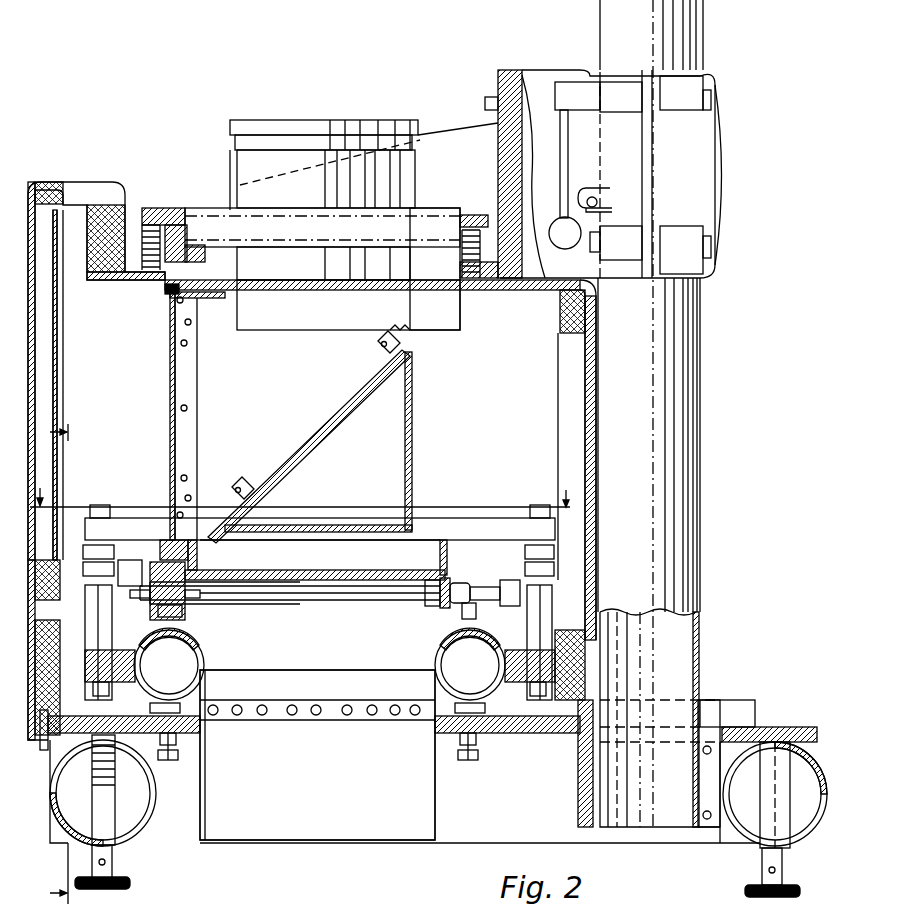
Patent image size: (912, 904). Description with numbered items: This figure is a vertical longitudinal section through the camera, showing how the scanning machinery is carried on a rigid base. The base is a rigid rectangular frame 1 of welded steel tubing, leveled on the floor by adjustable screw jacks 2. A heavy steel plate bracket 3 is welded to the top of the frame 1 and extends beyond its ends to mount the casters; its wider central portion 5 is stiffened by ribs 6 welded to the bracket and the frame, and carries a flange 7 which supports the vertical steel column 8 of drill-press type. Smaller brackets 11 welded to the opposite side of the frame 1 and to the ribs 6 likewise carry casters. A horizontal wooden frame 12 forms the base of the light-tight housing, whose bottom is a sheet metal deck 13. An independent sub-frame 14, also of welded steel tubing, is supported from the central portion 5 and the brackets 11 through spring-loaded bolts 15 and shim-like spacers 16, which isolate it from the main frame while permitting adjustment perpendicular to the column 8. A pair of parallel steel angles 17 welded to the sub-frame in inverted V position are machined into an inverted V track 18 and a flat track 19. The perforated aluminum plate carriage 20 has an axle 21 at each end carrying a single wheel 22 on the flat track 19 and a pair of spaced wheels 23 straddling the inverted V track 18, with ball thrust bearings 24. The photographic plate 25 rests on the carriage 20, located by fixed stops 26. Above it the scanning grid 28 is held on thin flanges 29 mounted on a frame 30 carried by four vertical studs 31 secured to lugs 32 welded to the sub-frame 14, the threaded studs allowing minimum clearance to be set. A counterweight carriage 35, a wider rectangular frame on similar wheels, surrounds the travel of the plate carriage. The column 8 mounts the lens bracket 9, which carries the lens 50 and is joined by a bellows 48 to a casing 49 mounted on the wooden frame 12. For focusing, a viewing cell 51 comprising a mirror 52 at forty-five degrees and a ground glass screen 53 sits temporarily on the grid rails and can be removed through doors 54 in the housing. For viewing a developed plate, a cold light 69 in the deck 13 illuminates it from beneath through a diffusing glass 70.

The rigid rectangular frame 1 is at (155, 790).
The adjustable screw jacks 2 is at (112, 862).
The bracket 3 is at (798, 712).
The wider central portion 5 is at (300, 488).
The ribs 6 is at (301, 755).
The flange 7 is at (724, 700).
The steel column 8 is at (703, 28).
The lens bracket 9 is at (724, 178).
The smaller brackets 11 is at (95, 715).
The horizontal wooden frame 12 is at (35, 735).
The sheet metal deck 13 is at (180, 727).
The sub-frame 14 is at (188, 662).
The spring-loaded bolts 15 is at (168, 758).
The shim-like spacers 16 is at (150, 708).
The parallel steel angles 17 is at (195, 632).
The inverted V track 18 is at (162, 612).
The flat track 19 is at (472, 610).
The plate carriage 20 is at (430, 606).
The axle 21 is at (392, 602).
The single wheel 22 is at (487, 587).
The spaced wheels 23 is at (162, 586).
The ball thrust bearings 24 is at (140, 604).
The photographic plate 25 is at (355, 602).
The fixed stops 26 is at (452, 590).
The scanning grid 28 is at (315, 571).
The thin flanges 29 is at (462, 578).
The frame 30 is at (198, 558).
The vertical studs 31 is at (85, 618).
The lugs 32 is at (130, 706).
The counterweight carriage 35 is at (130, 566).
The bellows 48 is at (147, 265).
The casing 49 is at (120, 196).
The lens 50 is at (237, 172).
The viewing cell 51 is at (168, 293).
The mirror 52 is at (292, 456).
The ground glass screen 53 is at (170, 444).
The doors 54 is at (57, 410).
The cold light 69 is at (262, 716).
The diffusing glass 70 is at (322, 695).